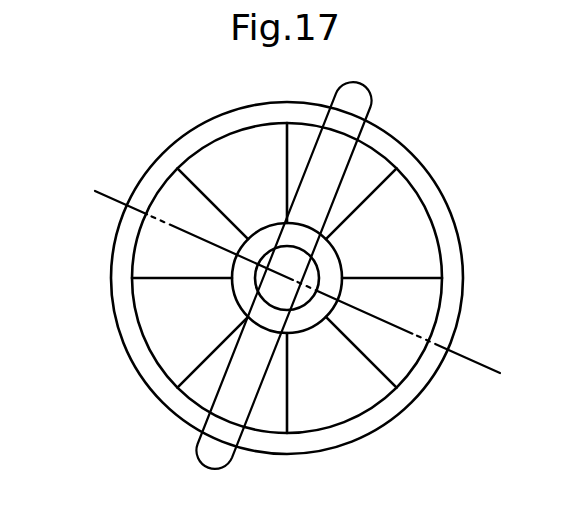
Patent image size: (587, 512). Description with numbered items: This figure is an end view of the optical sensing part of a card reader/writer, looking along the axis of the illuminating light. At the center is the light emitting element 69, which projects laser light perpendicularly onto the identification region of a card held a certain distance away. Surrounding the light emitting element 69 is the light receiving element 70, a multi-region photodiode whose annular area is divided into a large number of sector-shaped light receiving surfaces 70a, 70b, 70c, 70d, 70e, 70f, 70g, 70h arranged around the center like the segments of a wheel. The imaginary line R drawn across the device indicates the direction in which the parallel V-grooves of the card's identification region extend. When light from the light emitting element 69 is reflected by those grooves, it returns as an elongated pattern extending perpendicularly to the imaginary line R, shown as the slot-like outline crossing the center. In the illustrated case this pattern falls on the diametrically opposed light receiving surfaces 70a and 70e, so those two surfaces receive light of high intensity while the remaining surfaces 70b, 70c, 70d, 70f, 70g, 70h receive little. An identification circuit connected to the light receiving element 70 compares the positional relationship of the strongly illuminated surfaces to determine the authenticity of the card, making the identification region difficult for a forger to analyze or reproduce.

The light receiving element 70 is at (438, 260).
The light emitting element 69 is at (319, 269).
The light receiving surface 70a is at (378, 167).
The light receiving surface 70b is at (427, 240).
The light receiving surface 70c is at (402, 360).
The light receiving surface 70d is at (308, 423).
The light receiving surface 70e is at (190, 393).
The light receiving surface 70f is at (140, 300).
The light receiving surface 70g is at (173, 185).
The light receiving surface 70h is at (250, 137).
The imaginary line R is at (478, 352).